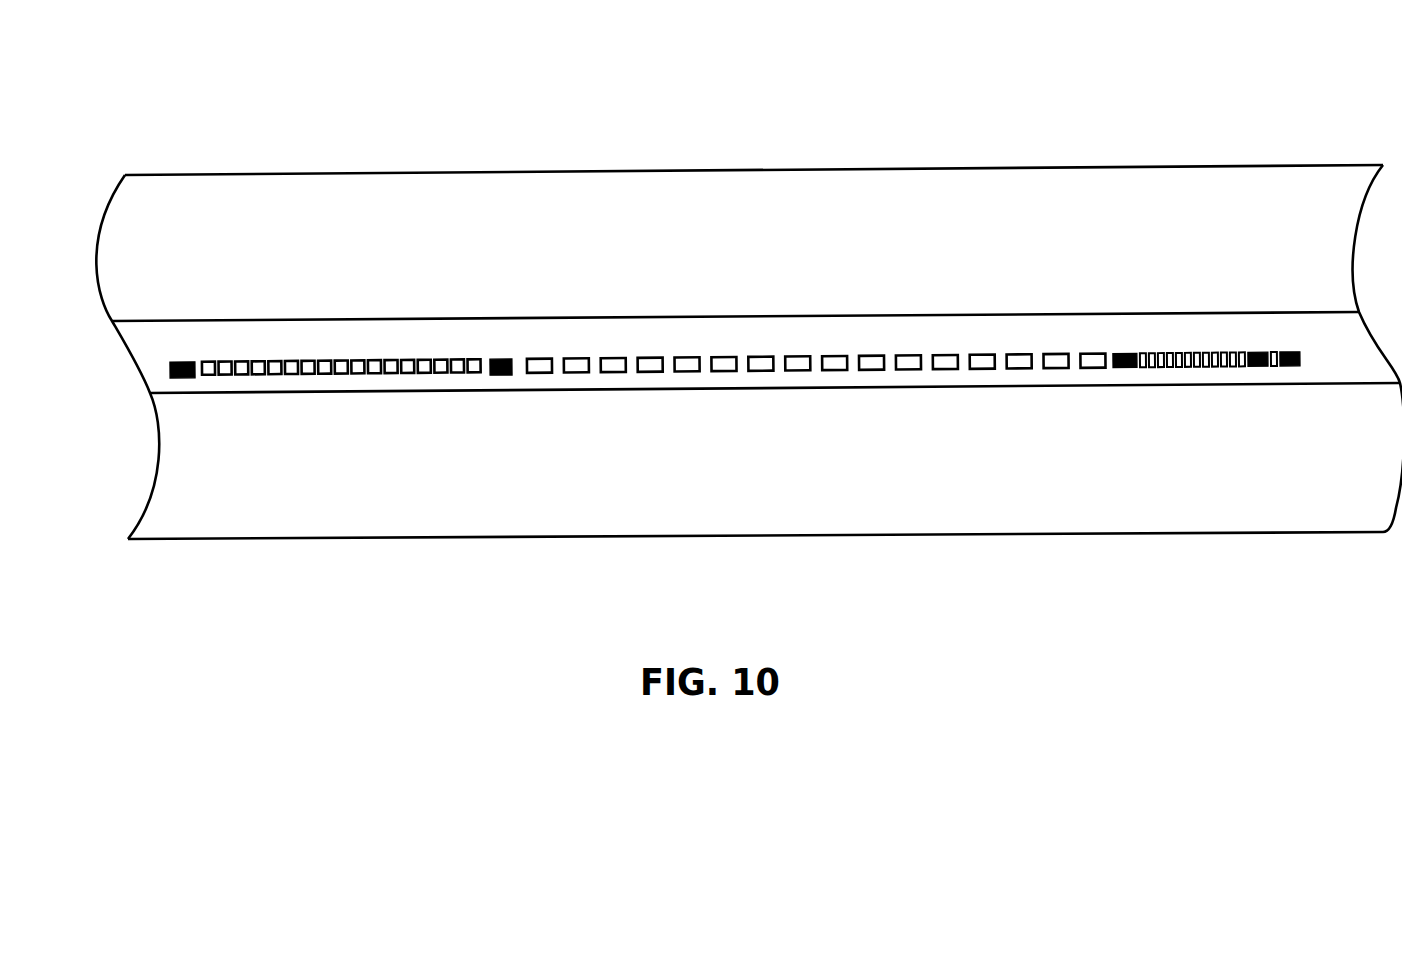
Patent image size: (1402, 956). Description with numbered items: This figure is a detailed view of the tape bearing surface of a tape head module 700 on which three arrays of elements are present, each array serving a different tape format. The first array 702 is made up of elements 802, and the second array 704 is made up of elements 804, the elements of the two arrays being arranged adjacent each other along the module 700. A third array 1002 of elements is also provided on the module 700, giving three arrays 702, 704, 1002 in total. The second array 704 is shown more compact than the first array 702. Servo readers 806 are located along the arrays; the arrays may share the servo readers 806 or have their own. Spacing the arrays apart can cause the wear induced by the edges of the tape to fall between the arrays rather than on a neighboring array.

The module 700 is at (567, 172).
The first array 702 is at (800, 283).
The second array 704 is at (1207, 280).
The third array 1002 is at (320, 285).
The elements of the first array 802 is at (980, 356).
The elements of the second array 804 is at (1242, 353).
The servo readers 806 is at (181, 378).